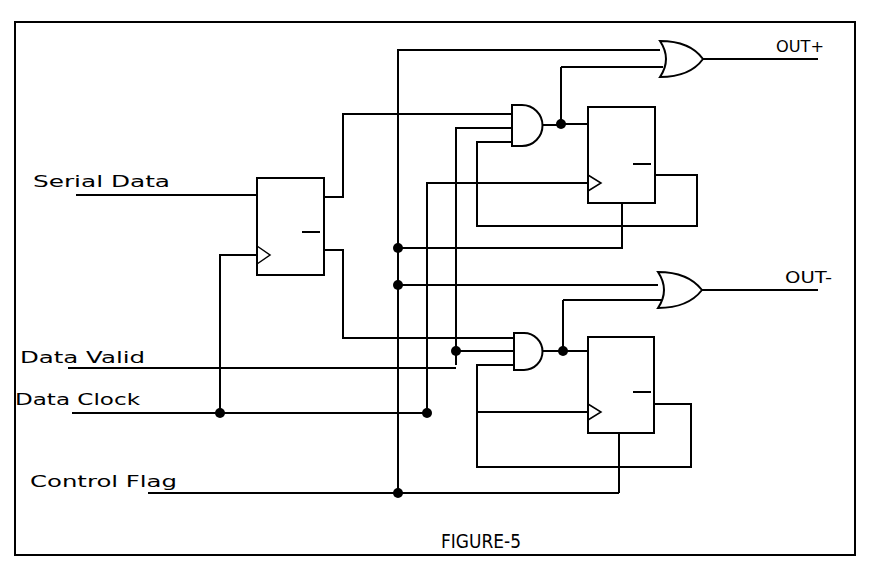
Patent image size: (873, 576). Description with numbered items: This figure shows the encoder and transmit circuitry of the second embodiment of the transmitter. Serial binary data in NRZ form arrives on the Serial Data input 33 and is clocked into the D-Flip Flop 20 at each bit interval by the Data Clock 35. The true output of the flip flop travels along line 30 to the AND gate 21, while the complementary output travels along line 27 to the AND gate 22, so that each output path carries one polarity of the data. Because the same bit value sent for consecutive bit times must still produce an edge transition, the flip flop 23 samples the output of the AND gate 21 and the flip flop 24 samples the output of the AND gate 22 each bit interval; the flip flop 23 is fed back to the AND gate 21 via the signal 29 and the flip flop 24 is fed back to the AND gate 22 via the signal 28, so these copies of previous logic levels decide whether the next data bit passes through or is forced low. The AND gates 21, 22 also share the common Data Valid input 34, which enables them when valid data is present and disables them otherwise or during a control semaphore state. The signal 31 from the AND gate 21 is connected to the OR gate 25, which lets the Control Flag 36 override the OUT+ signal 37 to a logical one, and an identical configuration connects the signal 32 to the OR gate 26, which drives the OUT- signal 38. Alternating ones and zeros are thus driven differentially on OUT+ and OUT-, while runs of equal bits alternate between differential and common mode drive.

The D-Flip Flop 20 is at (290, 214).
The AND gate 21 is at (541, 116).
The AND gate 22 is at (541, 340).
The Flip Flop 23 is at (634, 152).
The Flip Flop 24 is at (634, 409).
The OR gate 25 is at (632, 51).
The OR gate 26 is at (632, 281).
The inverted output line of flip-flop 20 27 is at (351, 338).
The feedback signal 28 is at (511, 467).
The feedback signal 29 is at (506, 226).
The output line of flip-flop 20 30 is at (428, 113).
The signal 31 is at (564, 85).
The signal 32 is at (564, 316).
The serial data input line 33 is at (213, 195).
The data valid input line 34 is at (181, 368).
The data clock input line 35 is at (179, 413).
The control flag input line 36 is at (248, 493).
The OUT+ signal 37 is at (741, 59).
The OUT- signal 38 is at (741, 290).